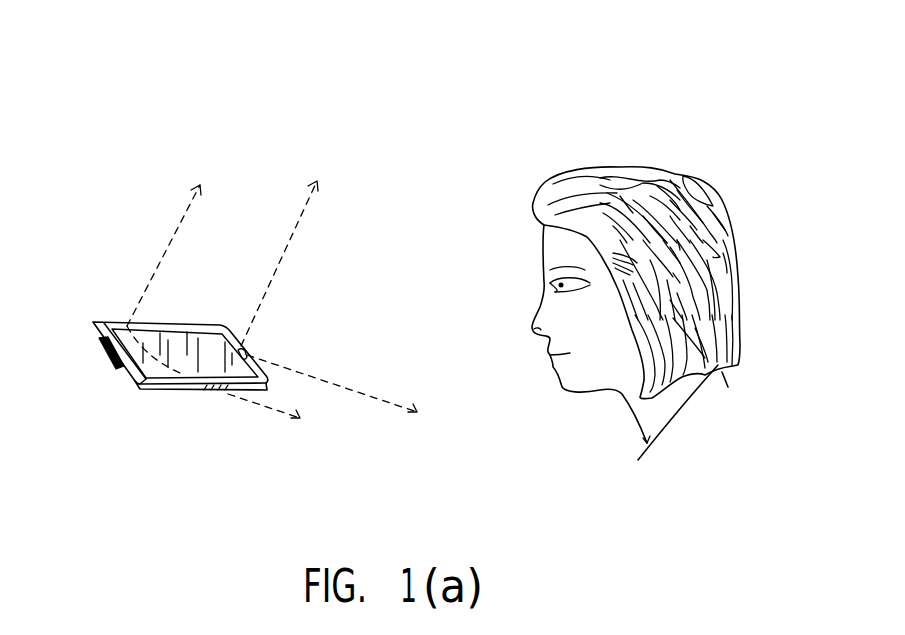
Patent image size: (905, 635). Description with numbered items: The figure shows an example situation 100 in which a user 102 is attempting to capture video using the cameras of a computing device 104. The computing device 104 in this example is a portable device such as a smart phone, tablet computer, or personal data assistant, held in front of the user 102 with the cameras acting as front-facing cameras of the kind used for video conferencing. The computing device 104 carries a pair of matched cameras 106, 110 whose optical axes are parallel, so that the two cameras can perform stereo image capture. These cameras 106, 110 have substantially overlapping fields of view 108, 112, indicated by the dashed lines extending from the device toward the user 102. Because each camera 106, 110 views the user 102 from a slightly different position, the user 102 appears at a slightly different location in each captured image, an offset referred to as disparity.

The situation 100 is at (716, 90).
The user 102 is at (495, 225).
The computing device 104 is at (185, 392).
The camera 106 is at (260, 372).
The field of view 108 is at (303, 202).
The camera 110 is at (112, 352).
The field of view 112 is at (137, 308).